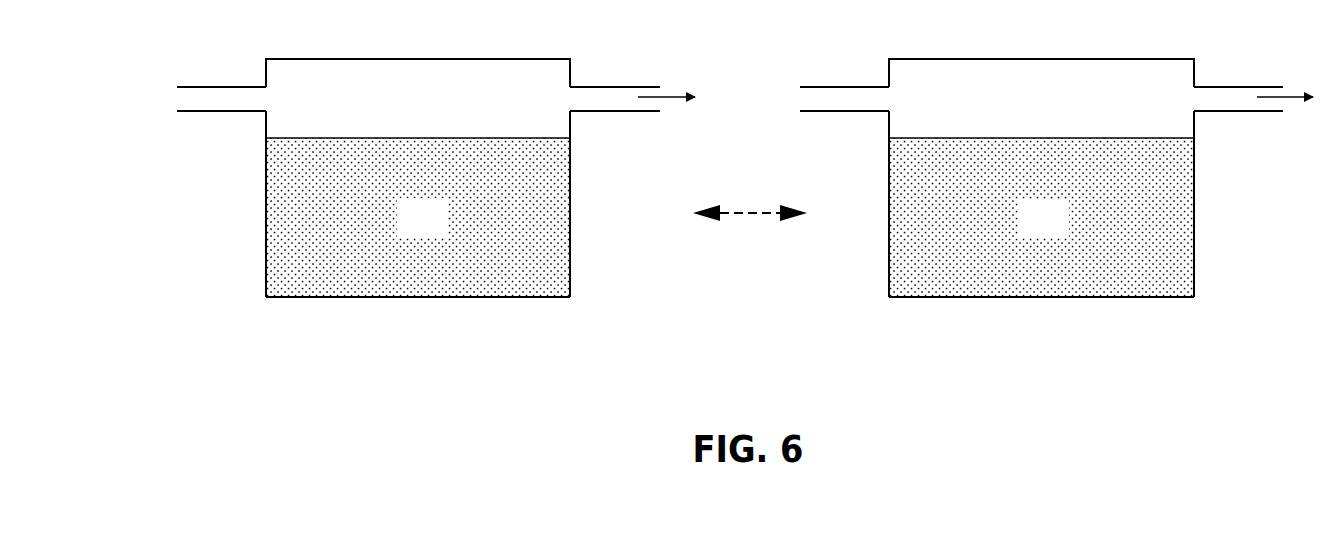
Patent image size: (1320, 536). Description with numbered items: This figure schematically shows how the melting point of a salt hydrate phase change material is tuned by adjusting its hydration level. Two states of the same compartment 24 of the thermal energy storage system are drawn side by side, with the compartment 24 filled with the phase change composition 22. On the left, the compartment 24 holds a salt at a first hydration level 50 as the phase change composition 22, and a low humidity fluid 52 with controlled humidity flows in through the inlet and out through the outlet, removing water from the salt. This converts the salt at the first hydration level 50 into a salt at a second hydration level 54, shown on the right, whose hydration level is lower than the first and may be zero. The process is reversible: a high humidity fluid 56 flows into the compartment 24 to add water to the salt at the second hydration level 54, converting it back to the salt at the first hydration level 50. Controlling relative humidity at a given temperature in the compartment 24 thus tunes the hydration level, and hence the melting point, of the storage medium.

The phase change composition 22 is at (283, 227).
The compartment 24 is at (497, 297).
The salt at a first hydration level 50 is at (407, 232).
The low humidity fluid 52 is at (183, 97).
The salt at a second hydration level 54 is at (1028, 233).
The high humidity fluid 56 is at (850, 97).